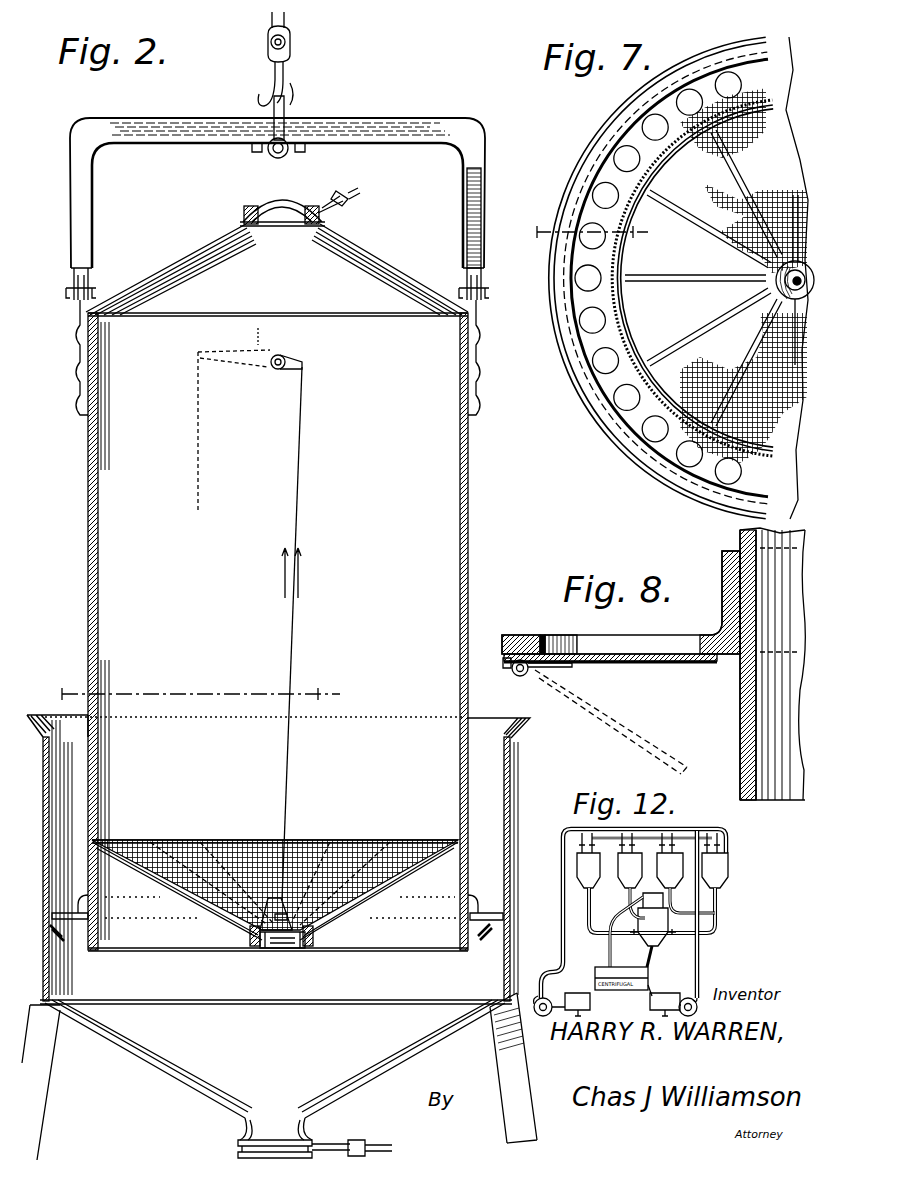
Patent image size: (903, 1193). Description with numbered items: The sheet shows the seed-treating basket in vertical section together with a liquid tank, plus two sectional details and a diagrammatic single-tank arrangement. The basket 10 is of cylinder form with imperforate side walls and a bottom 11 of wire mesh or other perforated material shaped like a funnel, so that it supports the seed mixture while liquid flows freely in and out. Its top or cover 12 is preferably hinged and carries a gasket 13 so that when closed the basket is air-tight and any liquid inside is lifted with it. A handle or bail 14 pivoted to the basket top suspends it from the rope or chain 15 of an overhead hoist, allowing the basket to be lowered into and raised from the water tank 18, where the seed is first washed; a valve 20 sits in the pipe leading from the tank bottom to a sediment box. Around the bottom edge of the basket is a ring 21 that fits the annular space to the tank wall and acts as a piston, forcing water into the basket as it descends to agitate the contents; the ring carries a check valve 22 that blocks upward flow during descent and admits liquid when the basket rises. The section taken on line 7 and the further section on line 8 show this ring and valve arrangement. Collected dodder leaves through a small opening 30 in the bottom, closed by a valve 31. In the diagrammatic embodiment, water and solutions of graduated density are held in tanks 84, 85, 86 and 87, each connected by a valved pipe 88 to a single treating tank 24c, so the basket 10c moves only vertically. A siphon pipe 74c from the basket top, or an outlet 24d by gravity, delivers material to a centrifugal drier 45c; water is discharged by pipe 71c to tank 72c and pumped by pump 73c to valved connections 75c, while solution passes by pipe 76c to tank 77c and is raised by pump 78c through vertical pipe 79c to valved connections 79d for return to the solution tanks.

In FIG. 2, the section line 7— 7 is at (250, 700).
In FIG. 7, the section line 8— 8 is at (589, 235).
In FIG. 2, the basket 10 is at (469, 540).
In FIG. 8, the basket 10 is at (740, 712).
In FIG. 2, the bottom 11 is at (312, 846).
In FIG. 7, the bottom 11 is at (703, 278).
In FIG. 2, the top or cover 12 is at (262, 200).
In FIG. 2, the gasket 13 is at (244, 212).
In FIG. 2, the handle or bail 14 is at (93, 204).
In FIG. 2, the rope or chain 15 is at (287, 27).
In FIG. 2, the water tank 18 is at (513, 815).
In FIG. 2, the valve 20 is at (336, 1144).
In FIG. 2, the ring 21 is at (500, 915).
In FIG. 7, the ring 21 is at (660, 450).
In FIG. 8, the ring 21 is at (505, 635).
In FIG. 2, the check valve 22 is at (485, 936).
In FIG. 7, the check valve 22 is at (626, 404).
In FIG. 8, the check valve 22 is at (652, 662).
In FIG. 2, the opening 30 is at (272, 952).
In FIG. 2, the valve 31 is at (250, 934).
In FIG. 7, the valve 31 is at (791, 277).
In FIG. 12, the basket 10c is at (653, 910).
In FIG. 12, the treating or operating tank 24c is at (630, 915).
In FIG. 12, the outlet 24d is at (656, 944).
In FIG. 12, the centrifugal drier 45c is at (608, 960).
In FIG. 12, the pipe 71c is at (560, 962).
In FIG. 12, the tank 72c is at (590, 1003).
In FIG. 12, the pump 73c is at (547, 997).
In FIG. 12, the siphon pipe or tube 74c is at (648, 960).
In FIG. 12, the valved connections 75c is at (580, 844).
In FIG. 12, the pipe 76c is at (652, 988).
In FIG. 12, the tank 77c is at (650, 997).
In FIG. 12, the pump 78c is at (700, 995).
In FIG. 12, the vertical pipe 79c is at (698, 952).
In FIG. 12, the valved connections 79d is at (677, 845).
In FIG. 12, the tank 84 is at (588, 870).
In FIG. 12, the tank 85 is at (630, 870).
In FIG. 12, the tank 86 is at (670, 870).
In FIG. 12, the tank 87 is at (715, 870).
In FIG. 12, the pipe 88 is at (620, 893).